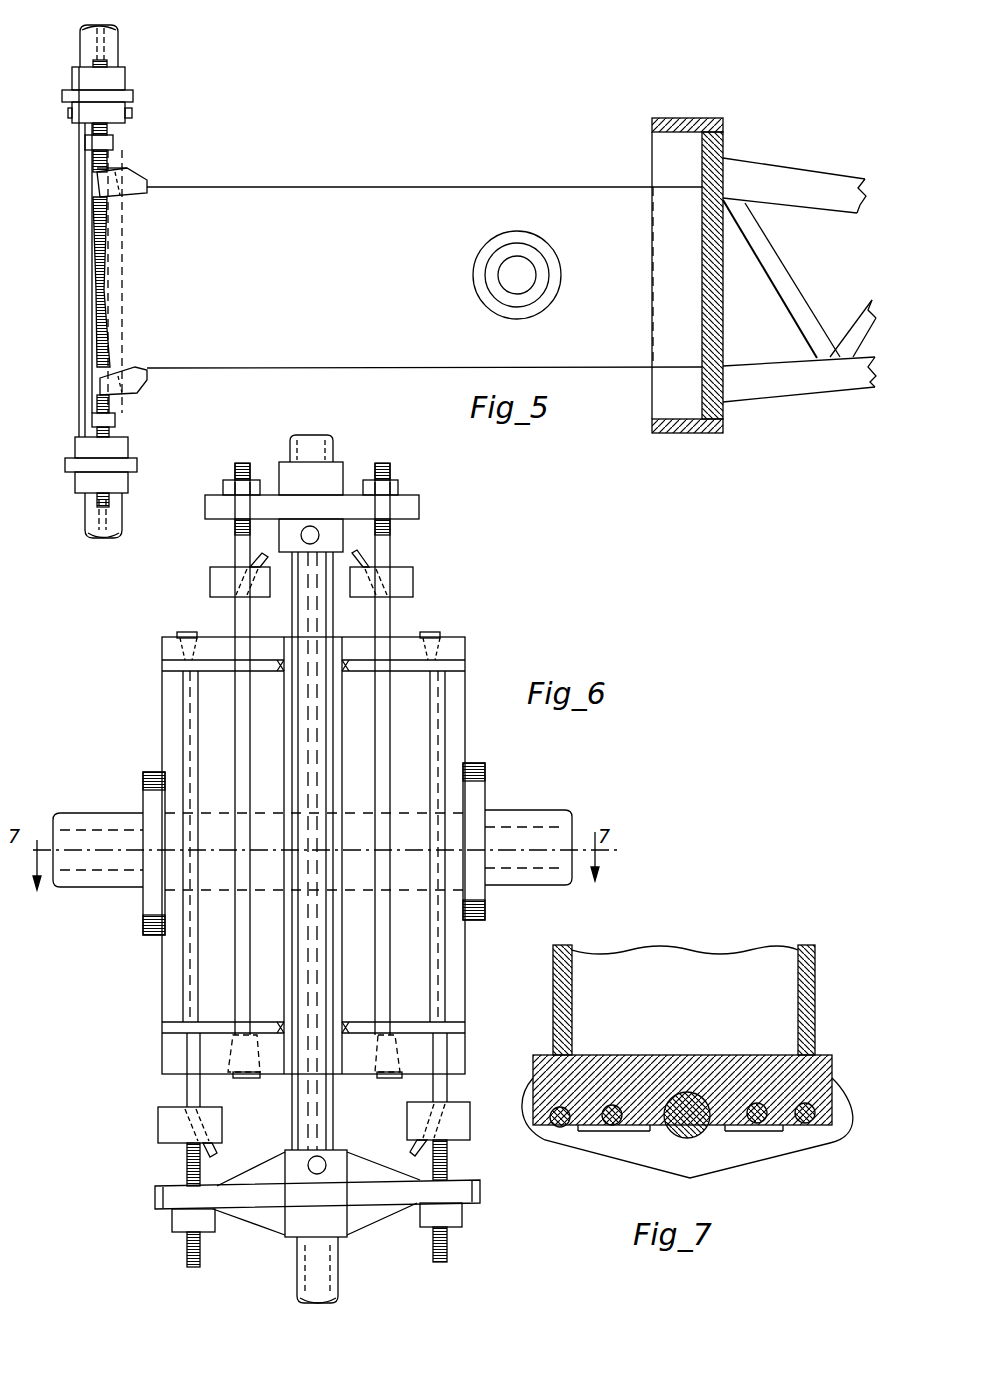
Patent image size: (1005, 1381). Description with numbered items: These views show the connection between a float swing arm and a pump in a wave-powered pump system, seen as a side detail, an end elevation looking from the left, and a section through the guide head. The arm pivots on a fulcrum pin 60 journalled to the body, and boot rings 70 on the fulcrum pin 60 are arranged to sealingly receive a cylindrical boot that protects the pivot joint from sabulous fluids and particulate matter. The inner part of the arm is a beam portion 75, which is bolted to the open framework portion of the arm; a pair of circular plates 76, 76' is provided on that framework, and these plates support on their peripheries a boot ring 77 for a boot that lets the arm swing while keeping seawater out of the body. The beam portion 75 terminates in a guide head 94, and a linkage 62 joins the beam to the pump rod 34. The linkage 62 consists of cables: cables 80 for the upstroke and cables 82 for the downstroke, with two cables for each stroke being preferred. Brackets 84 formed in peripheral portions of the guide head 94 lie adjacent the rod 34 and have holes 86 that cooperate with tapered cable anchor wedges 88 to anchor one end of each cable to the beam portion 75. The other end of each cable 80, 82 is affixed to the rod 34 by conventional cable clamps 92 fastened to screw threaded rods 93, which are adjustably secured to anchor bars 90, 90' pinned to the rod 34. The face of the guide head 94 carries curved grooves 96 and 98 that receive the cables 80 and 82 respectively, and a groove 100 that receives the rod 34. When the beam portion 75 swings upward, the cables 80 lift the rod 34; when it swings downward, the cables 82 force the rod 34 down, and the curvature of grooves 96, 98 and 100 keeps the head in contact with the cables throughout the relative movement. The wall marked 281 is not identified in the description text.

In FIG. 5, the pump rod 34 is at (91, 533).
In FIG. 6, the pump rod 34 is at (318, 435).
In FIG. 7, the pump rod 34 is at (695, 1130).
In FIG. 5, the fulcrum pin 60 is at (536, 280).
In FIG. 6, the fulcrum pin 60 is at (522, 810).
In FIG. 5, the linkage 62 is at (72, 283).
In FIG. 5, the boot rings 70 is at (473, 290).
In FIG. 6, the boot rings 70 is at (143, 790).
In FIG. 5, the beam portion 75 is at (330, 368).
In FIG. 5, the circular plate 76 is at (733, 275).
In FIG. 5, the circular plate 76' is at (677, 275).
In FIG. 5, the boot ring 77 is at (688, 118).
In FIG. 6, the cables 80 is at (183, 728).
In FIG. 5, the cables 82 is at (93, 165).
In FIG. 6, the cables 82 is at (250, 613).
In FIG. 6, the brackets 84 is at (465, 985).
In FIG. 7, the brackets 84 is at (780, 1125).
In FIG. 6, the holes 86 is at (233, 1078).
In FIG. 5, the tapered cable anchor wedges 88 is at (122, 170).
In FIG. 6, the tapered cable anchor wedges 88 is at (187, 632).
In FIG. 5, the anchor bar 90 is at (76, 95).
In FIG. 6, the anchor bar 90 is at (334, 507).
In FIG. 5, the anchor bar 90' is at (81, 465).
In FIG. 6, the anchor bar 90' is at (342, 1193).
In FIG. 7, the anchor bar 90' is at (687, 1140).
In FIG. 5, the cable clamps 92 is at (85, 143).
In FIG. 6, the cable clamps 92 is at (210, 570).
In FIG. 5, the screw threaded rods 93 is at (96, 513).
In FIG. 6, the screw threaded rods 93 is at (242, 463).
In FIG. 5, the guide head 94 is at (122, 305).
In FIG. 7, the guide head 94 is at (832, 1065).
In FIG. 6, the curved grooves 96 is at (237, 945).
In FIG. 6, the curved grooves 98 is at (183, 696).
In FIG. 6, the groove 100 is at (294, 1063).
In FIG. 7, the groove 100 is at (657, 1131).
In FIG. 7, the wall 281 is at (815, 1015).